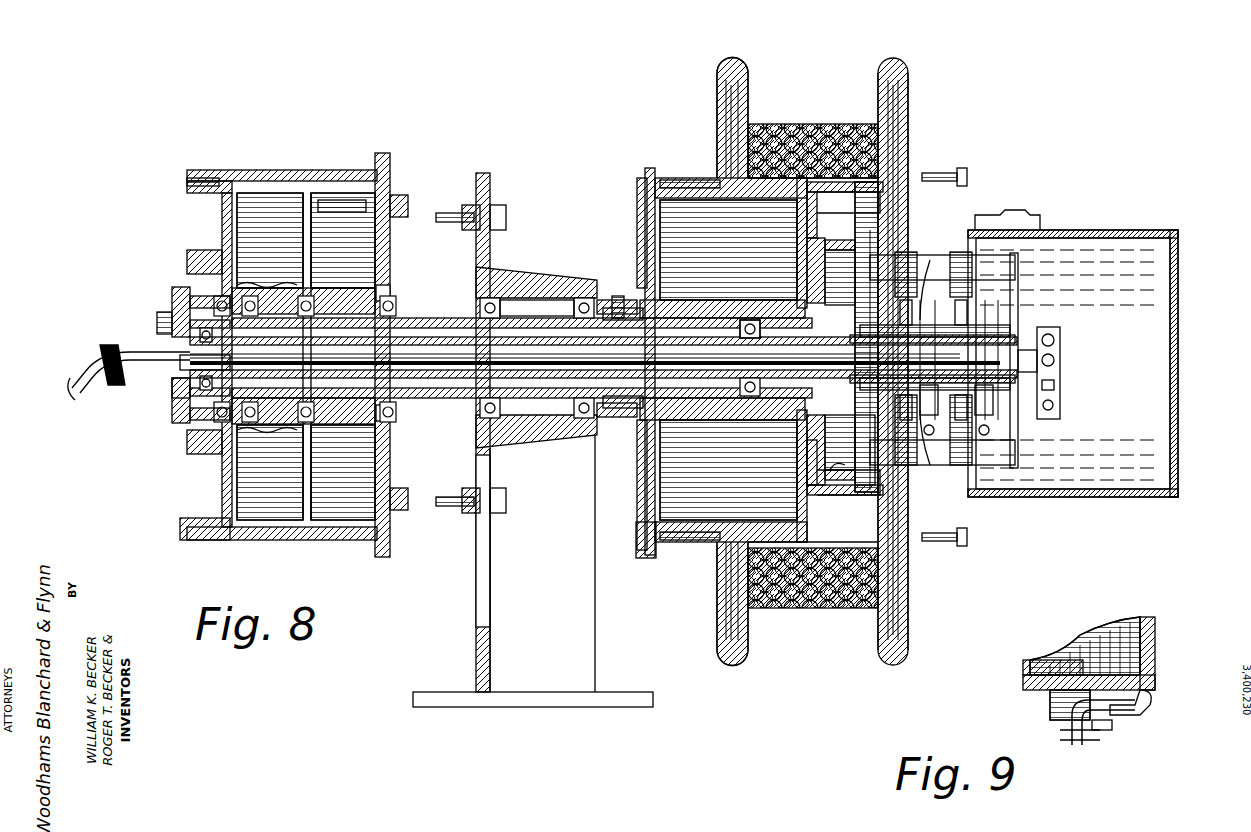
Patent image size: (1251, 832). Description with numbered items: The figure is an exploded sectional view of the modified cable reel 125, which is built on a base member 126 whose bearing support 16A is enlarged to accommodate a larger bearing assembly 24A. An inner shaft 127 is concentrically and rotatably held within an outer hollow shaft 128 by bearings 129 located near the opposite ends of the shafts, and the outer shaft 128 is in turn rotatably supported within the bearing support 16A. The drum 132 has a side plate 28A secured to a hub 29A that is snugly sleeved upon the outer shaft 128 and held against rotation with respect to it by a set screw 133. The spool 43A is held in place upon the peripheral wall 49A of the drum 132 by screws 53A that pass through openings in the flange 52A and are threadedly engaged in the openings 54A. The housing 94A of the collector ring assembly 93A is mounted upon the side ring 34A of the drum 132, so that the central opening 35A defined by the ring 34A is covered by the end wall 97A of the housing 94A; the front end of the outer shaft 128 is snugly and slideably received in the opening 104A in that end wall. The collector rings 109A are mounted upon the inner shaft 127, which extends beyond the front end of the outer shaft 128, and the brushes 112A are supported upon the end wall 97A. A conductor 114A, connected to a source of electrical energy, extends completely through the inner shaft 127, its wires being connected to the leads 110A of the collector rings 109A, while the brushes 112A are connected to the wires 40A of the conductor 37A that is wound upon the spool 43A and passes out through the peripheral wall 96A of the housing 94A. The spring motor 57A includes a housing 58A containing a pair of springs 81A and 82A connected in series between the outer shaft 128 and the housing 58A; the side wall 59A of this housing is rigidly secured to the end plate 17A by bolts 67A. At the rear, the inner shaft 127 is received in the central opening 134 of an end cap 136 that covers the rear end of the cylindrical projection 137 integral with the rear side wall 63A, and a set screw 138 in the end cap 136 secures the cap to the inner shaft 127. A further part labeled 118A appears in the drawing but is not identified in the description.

In FIG. 8, the bearing support 16A is at (598, 282).
In FIG. 8, the end plate 17A is at (482, 666).
In FIG. 8, the bearing assembly 24A is at (548, 296).
In FIG. 8, the side plate 28A is at (640, 492).
In FIG. 8, the hub 29A is at (632, 418).
In FIG. 8, the side ring 34A is at (800, 205).
In FIG. 9, the side ring 34A is at (1128, 650).
In FIG. 8, the central opening 35A is at (792, 500).
In FIG. 8, the conductor 37A is at (840, 128).
In FIG. 9, the conductor 37A is at (1072, 748).
In FIG. 8, the wires 40A is at (770, 130).
In FIG. 8, the spool 43A is at (935, 92).
In FIG. 8, the peripheral wall 49A is at (708, 178).
In FIG. 9, the peripheral wall 49A is at (1160, 632).
In FIG. 8, the flange 52A is at (885, 205).
In FIG. 8, the screws 53A is at (955, 175).
In FIG. 8, the openings 54A is at (810, 195).
In FIG. 8, the spring motor 57A is at (330, 168).
In FIG. 8, the housing 58A is at (255, 192).
In FIG. 8, the side wall 59A is at (388, 190).
In FIG. 8, the rear side wall 63A is at (224, 210).
In FIG. 8, the bolts 67A is at (430, 212).
In FIG. 8, the spring 81A is at (250, 192).
In FIG. 8, the spring 82A is at (348, 205).
In FIG. 8, the collector ring assembly 93A is at (950, 490).
In FIG. 8, the housing 94A is at (818, 500).
In FIG. 9, the housing 94A is at (1152, 700).
In FIG. 8, the peripheral wall 96A is at (822, 505).
In FIG. 9, the peripheral wall 96A is at (1092, 735).
In FIG. 8, the end wall 97A is at (812, 268).
In FIG. 9, the end wall 97A is at (1055, 670).
In FIG. 8, the opening 104A is at (790, 403).
In FIG. 8, the collector rings 109A is at (1000, 320).
In FIG. 8, the leads 110A is at (1060, 375).
In FIG. 8, the brushes 112A is at (995, 425).
In FIG. 8, the conductor 114A is at (98, 385).
In FIG. 8, the cover 118A is at (1178, 306).
In FIG. 8, the cable reel 125 is at (370, 560).
In FIG. 8, the base member 126 is at (592, 712).
In FIG. 8, the shaft 127 is at (455, 337).
In FIG. 8, the outer hollow shaft 128 is at (418, 320).
In FIG. 8, the bearings 129 is at (200, 315).
In FIG. 8, the drum 132 is at (690, 550).
In FIG. 9, the drum 132 is at (1096, 625).
In FIG. 8, the set screw 133 is at (640, 300).
In FIG. 8, the central opening 134 is at (165, 330).
In FIG. 8, the end cap 136 is at (178, 390).
In FIG. 8, the cylindrical projection 137 is at (210, 420).
In FIG. 8, the set screw 138 is at (180, 300).